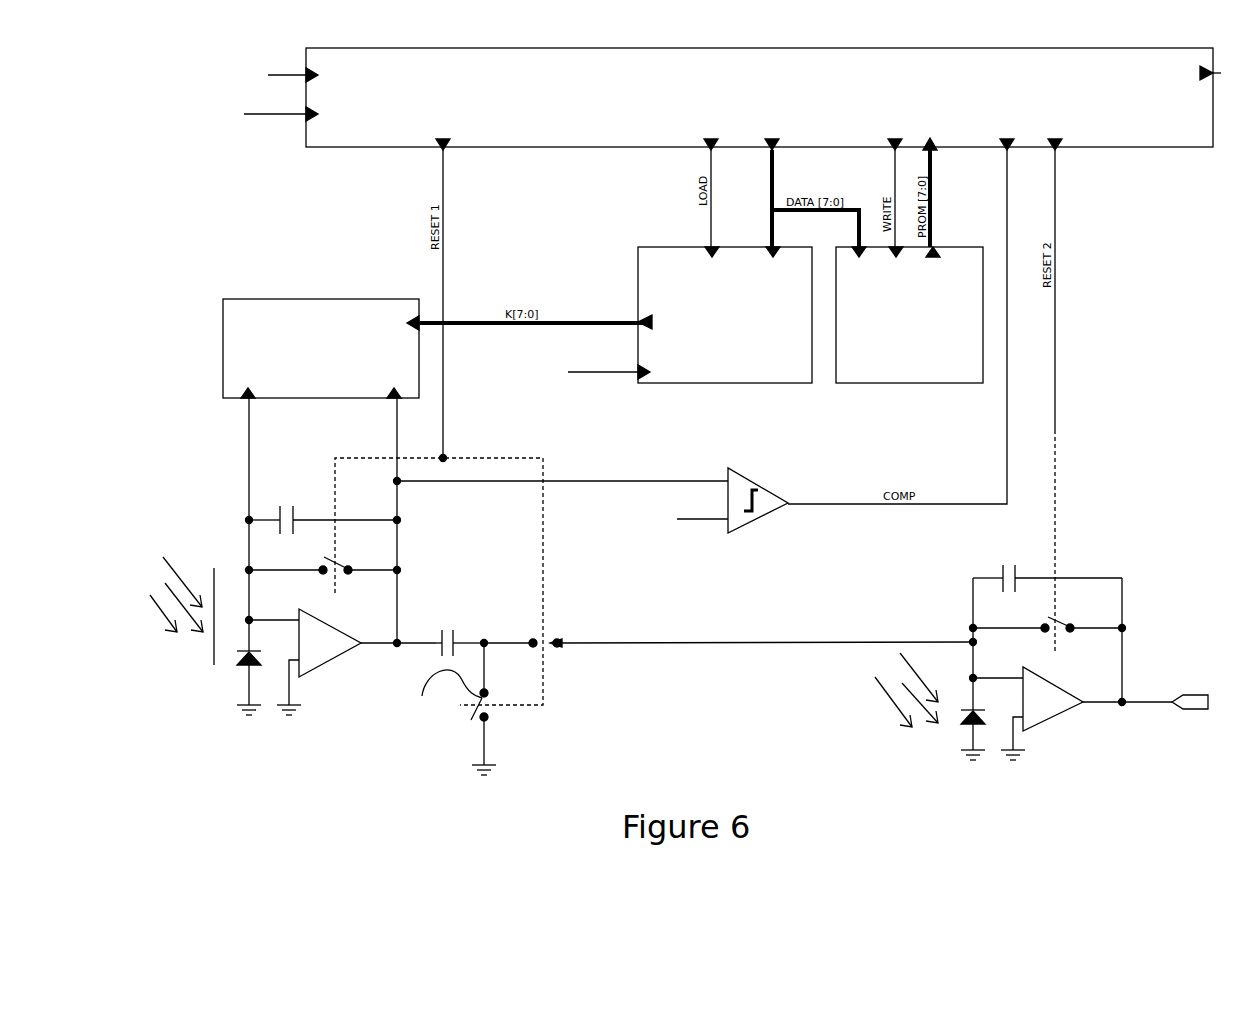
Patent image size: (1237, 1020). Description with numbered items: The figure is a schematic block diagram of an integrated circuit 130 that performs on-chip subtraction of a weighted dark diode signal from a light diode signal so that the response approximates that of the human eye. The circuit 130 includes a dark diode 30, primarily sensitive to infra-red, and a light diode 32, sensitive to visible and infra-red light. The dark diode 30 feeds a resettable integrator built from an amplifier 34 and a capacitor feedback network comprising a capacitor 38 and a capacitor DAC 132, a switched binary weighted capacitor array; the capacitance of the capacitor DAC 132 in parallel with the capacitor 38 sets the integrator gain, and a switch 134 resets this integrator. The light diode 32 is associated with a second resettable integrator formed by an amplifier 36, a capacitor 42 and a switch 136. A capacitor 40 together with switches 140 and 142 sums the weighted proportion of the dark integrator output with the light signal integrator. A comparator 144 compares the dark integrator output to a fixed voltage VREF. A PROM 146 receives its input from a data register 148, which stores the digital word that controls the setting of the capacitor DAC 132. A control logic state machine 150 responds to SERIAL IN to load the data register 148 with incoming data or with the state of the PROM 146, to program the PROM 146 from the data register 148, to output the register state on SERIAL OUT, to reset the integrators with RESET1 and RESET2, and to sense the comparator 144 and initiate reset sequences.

The dark diode 30 is at (247, 668).
The light diode 32 is at (968, 718).
The amplifier 34 is at (339, 650).
The amplifier 36 is at (1040, 718).
The capacitor 38 is at (294, 500).
The capacitor 40 is at (458, 621).
The capacitor 42 is at (993, 578).
The circuit 130 is at (370, 230).
The capacitor DAC 132 is at (375, 318).
The switch 134 is at (350, 558).
The switch 136 is at (1067, 612).
The switch 140 is at (546, 641).
The switch 142 is at (457, 709).
The comparator 144 is at (732, 467).
The PROM 146 is at (905, 382).
The data register 148 is at (640, 318).
The control logic state machine 150 is at (568, 121).